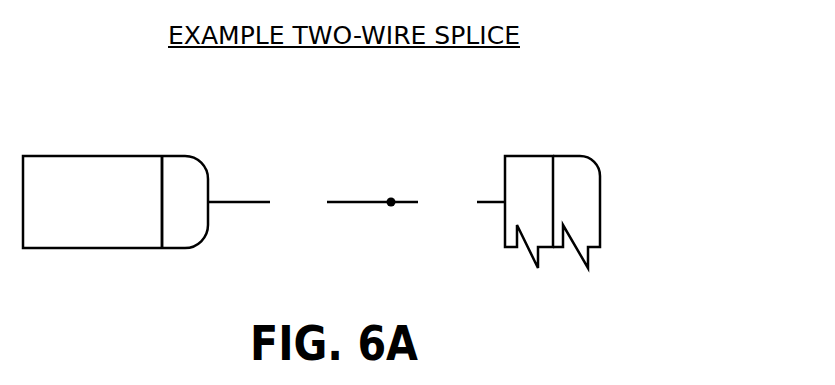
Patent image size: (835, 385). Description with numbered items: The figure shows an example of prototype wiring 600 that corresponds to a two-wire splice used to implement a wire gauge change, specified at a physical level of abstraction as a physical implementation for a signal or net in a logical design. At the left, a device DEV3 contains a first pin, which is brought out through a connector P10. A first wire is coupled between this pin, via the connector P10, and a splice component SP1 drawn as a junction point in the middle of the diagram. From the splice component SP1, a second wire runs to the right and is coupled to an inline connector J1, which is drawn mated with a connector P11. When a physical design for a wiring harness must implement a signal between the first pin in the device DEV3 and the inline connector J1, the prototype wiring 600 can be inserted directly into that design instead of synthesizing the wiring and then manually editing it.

The prototype wiring 600 is at (755, 98).
The device DEV3 is at (115, 223).
The connector P10 is at (192, 222).
The splice component SP1 is at (378, 189).
The inline connector J1 is at (514, 215).
The plug connector P11 is at (599, 215).